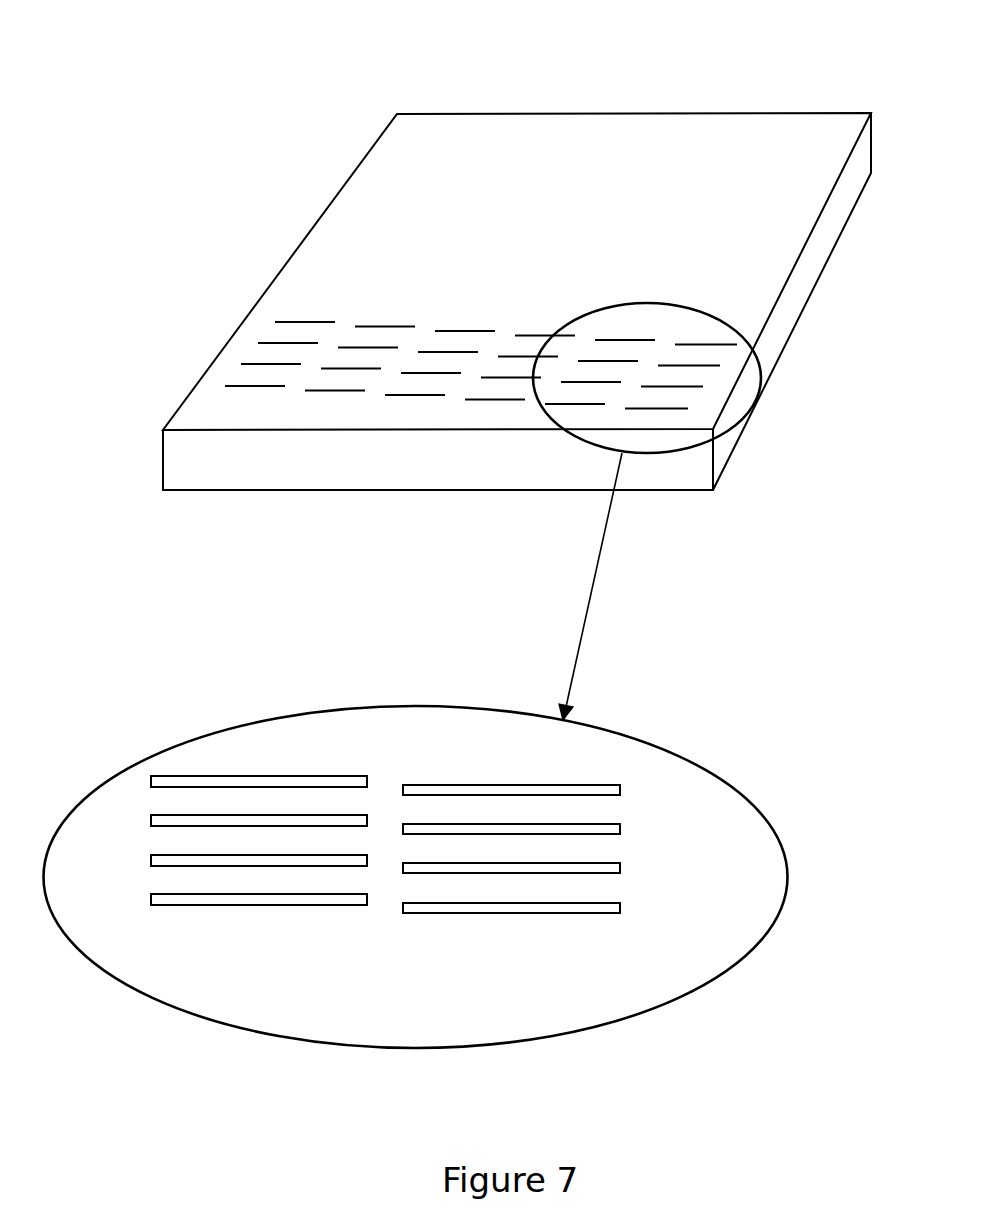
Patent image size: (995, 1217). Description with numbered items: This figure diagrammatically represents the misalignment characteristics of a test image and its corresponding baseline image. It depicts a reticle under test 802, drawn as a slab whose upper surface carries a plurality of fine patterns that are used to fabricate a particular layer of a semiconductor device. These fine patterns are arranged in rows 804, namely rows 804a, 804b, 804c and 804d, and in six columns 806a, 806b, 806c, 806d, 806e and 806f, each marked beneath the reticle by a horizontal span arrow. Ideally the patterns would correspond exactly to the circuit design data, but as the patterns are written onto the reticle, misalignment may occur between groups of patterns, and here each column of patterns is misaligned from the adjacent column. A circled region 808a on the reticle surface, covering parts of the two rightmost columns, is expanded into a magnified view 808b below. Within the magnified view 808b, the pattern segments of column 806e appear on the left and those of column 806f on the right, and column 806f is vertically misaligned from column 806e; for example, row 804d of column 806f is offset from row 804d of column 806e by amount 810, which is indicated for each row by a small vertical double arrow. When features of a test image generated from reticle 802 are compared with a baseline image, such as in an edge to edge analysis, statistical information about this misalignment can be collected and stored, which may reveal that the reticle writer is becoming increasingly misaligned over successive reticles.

The reticle under test 802 is at (742, 113).
The rows 804 is at (860, 94).
The row 804a is at (271, 330).
The row 804b is at (254, 351).
The row 804c is at (239, 356).
The row 804d is at (222, 378).
The column 806a is at (261, 509).
The column 806b is at (342, 509).
The column 806c is at (422, 509).
The column 806d is at (503, 509).
The column 806e is at (582, 509).
The column 806f is at (663, 509).
The magnified region 808a is at (762, 388).
The magnified view 808b is at (650, 745).
The misalignment amount 810 is at (424, 769).